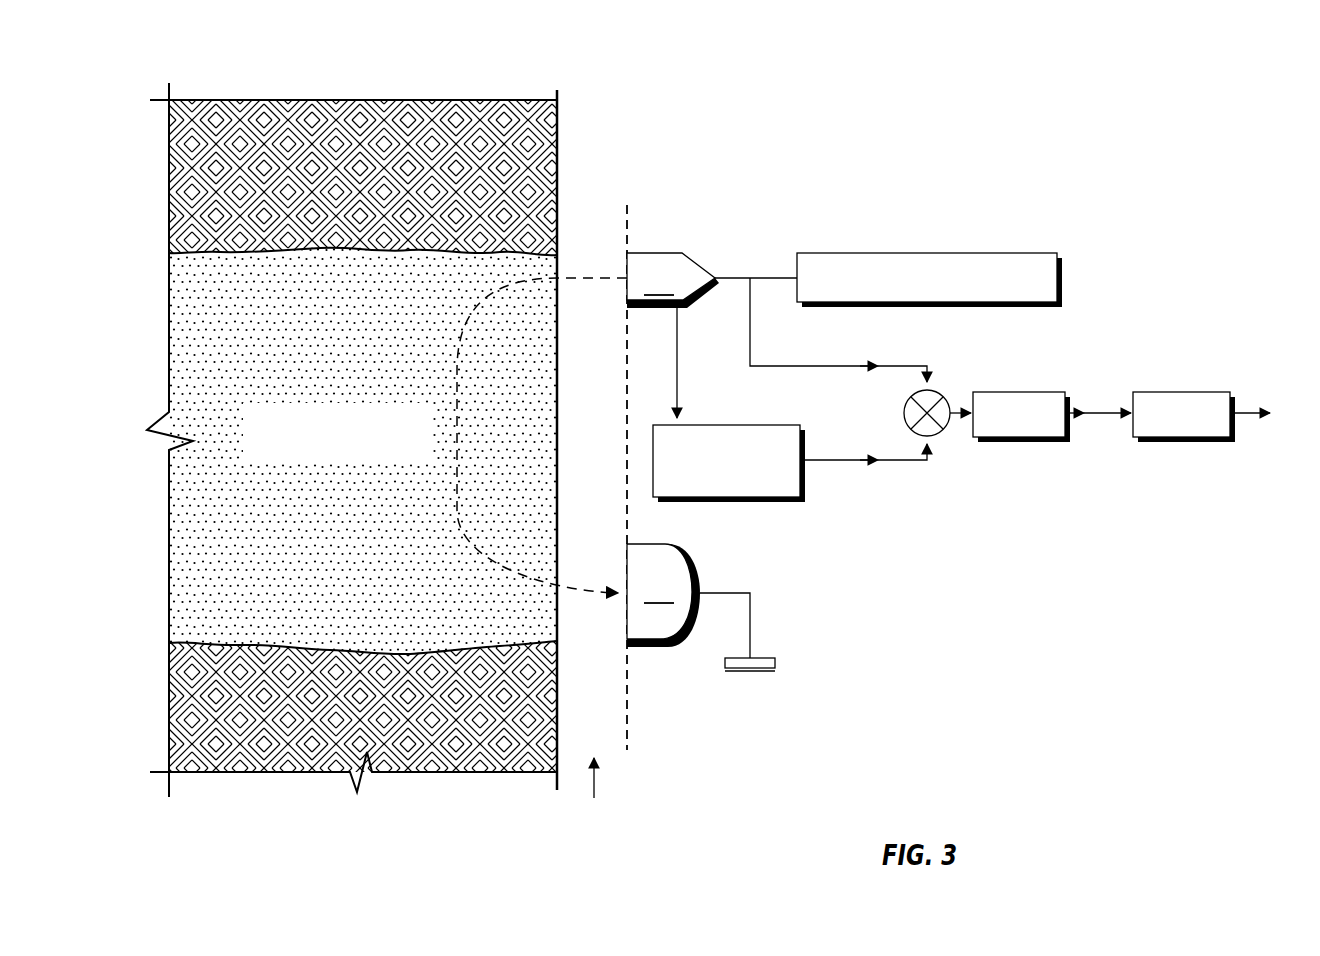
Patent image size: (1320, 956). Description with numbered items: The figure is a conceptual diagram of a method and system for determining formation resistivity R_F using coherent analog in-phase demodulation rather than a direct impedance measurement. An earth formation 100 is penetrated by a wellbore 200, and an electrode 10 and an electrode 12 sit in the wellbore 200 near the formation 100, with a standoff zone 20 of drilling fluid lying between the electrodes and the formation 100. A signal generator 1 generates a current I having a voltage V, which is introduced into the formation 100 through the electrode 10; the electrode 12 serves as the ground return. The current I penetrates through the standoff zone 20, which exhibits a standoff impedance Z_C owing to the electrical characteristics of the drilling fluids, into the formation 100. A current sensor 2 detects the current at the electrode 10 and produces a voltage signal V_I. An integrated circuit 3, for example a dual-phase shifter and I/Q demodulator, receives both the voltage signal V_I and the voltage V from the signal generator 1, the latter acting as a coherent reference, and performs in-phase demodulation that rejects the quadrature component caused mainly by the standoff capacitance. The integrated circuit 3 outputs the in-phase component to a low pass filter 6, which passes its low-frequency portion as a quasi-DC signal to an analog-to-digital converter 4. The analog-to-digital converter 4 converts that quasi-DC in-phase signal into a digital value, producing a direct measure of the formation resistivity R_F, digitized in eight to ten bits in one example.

The earth formation 100 is at (336, 54).
The wellbore 200 is at (601, 76).
The electrode 10 is at (674, 295).
The standoff zone 20 is at (604, 432).
The electrode 12 is at (674, 603).
The signal generator 1 is at (907, 253).
The current sensor 2 is at (745, 425).
The integrated circuit 3 is at (937, 392).
The low pass filter 6 is at (1018, 392).
The analog-to-digital converter 4 is at (1183, 392).